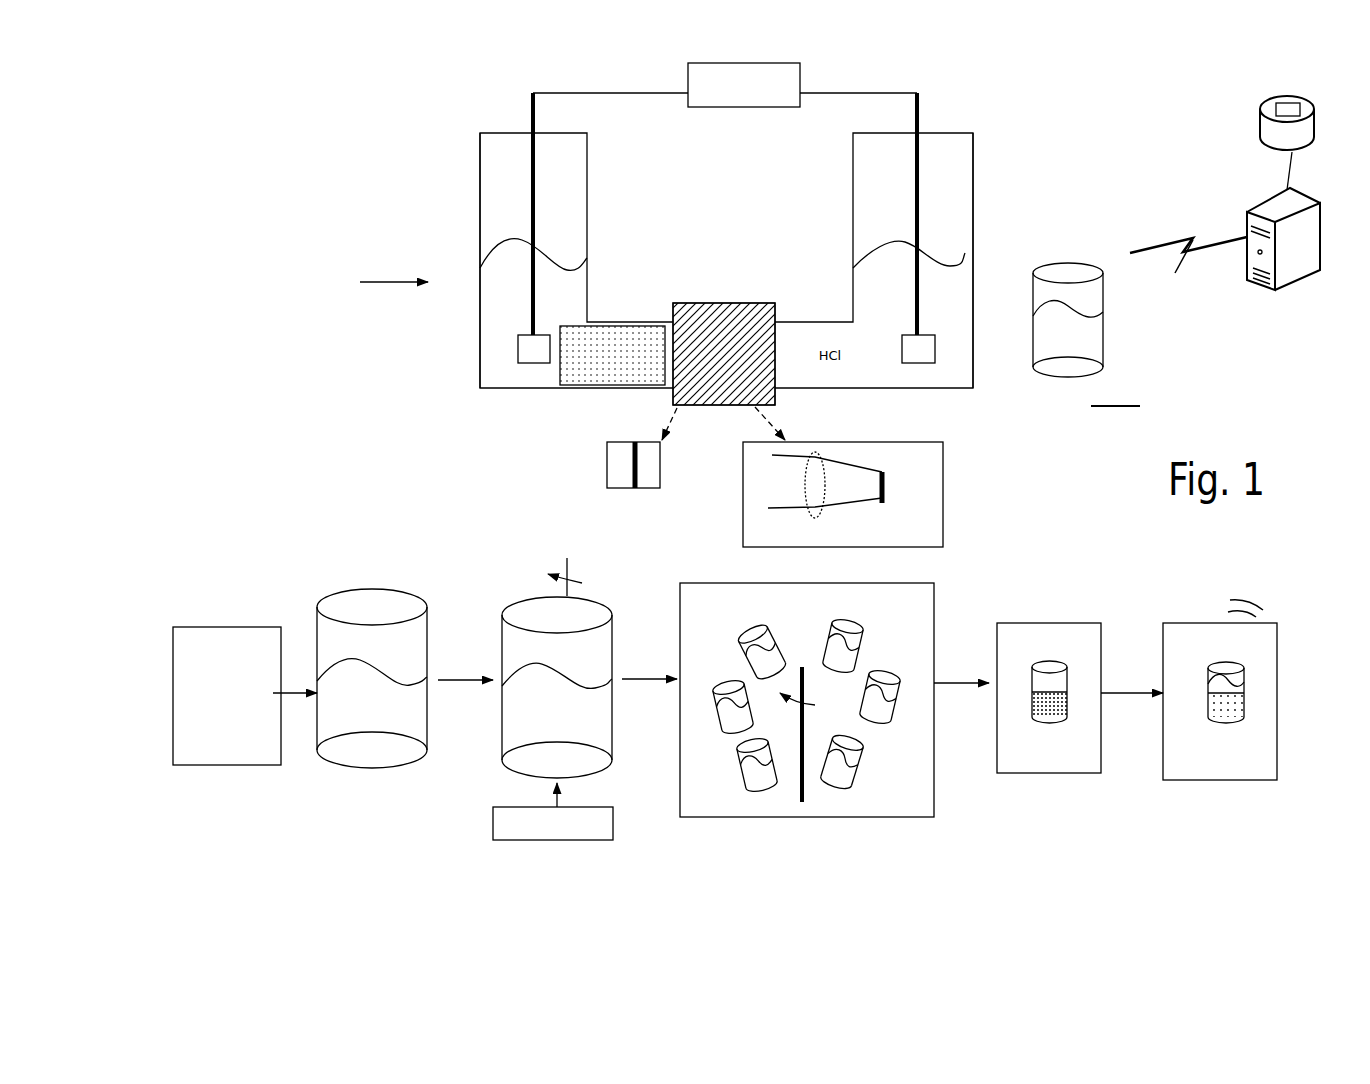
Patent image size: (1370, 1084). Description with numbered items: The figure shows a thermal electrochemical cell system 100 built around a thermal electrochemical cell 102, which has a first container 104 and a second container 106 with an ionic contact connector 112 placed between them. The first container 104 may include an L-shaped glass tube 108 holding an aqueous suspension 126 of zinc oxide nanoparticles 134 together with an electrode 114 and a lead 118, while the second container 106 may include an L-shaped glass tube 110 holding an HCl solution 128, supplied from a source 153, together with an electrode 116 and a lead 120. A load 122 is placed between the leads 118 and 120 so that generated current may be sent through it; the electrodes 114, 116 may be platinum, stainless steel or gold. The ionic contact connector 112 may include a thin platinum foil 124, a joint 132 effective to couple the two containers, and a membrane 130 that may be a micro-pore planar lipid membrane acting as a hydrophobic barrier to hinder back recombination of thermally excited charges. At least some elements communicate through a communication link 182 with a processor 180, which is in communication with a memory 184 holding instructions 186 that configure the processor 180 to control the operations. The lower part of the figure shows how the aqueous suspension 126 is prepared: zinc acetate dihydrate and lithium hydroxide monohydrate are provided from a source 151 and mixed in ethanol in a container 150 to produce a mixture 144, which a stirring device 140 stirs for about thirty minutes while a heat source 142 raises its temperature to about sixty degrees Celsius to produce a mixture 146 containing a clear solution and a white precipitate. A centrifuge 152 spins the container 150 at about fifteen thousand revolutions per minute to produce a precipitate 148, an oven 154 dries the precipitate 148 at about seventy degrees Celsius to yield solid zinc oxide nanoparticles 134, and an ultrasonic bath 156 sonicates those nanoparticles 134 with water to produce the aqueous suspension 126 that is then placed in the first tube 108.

The thermal electrochemical cell system 100 is at (811, 269).
The thermal electrochemical cell 102 is at (1120, 172).
The first container 104 is at (371, 273).
The second container 106 is at (995, 181).
The L-shaped glass tube 108 is at (465, 173).
The L-shaped glass tube 110 is at (973, 149).
The ionic contact connector 112 is at (717, 308).
The electrode 114 is at (517, 350).
The electrode 116 is at (934, 362).
The lead 118 is at (531, 115).
The lead 120 is at (922, 117).
The load 122 is at (742, 63).
The platinum foil 124 is at (607, 473).
The aqueous suspension 126 is at (497, 252).
The HCl solution 128 is at (962, 263).
The membrane 130 is at (885, 487).
The joint 132 is at (820, 457).
The zinc oxide nanoparticles 134 is at (585, 375).
The stirring device 140 is at (535, 573).
The heat source 142 is at (493, 823).
The mixture 144 is at (390, 670).
The mixture 146 is at (577, 680).
The precipitate 148 is at (770, 657).
The container 150 is at (355, 603).
The source 151 is at (248, 767).
The centrifuge 152 is at (937, 632).
The source 153 is at (1075, 262).
The oven 154 is at (1102, 650).
The ultrasonic bath 156 is at (1278, 688).
The processor 180 is at (1257, 290).
The communication link 182 is at (1188, 270).
The memory 184 is at (1267, 150).
The instructions 186 is at (1277, 103).